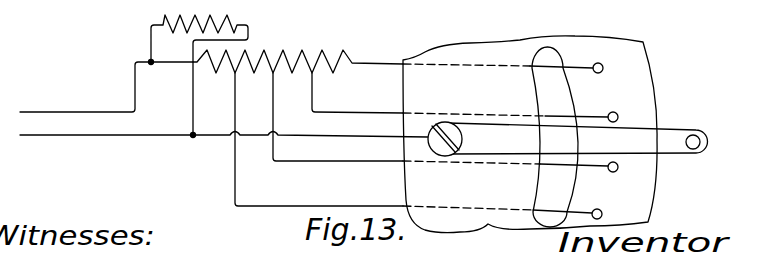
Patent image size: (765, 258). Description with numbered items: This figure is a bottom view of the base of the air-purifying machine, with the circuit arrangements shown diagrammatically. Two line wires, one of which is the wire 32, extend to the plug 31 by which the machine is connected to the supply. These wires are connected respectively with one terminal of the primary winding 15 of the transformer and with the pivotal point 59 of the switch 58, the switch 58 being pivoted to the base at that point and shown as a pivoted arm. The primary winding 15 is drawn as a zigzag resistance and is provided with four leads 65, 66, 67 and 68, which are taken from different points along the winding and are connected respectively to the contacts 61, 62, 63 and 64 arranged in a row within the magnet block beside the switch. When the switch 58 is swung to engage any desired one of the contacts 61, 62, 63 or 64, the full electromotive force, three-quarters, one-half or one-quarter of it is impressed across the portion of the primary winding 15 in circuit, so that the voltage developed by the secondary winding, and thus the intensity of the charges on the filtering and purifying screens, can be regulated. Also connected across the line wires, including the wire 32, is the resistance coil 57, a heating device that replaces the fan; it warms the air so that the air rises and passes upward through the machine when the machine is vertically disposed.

The plug 31 is at (84, 111).
The wire 32 is at (102, 137).
The resistance coil 57 is at (208, 14).
The primary winding 15 is at (302, 50).
The switch 58 is at (660, 148).
The pivotal point 59 is at (437, 152).
The contact 61 is at (604, 66).
The contact 62 is at (619, 114).
The contact 63 is at (619, 170).
The contact 64 is at (603, 214).
The lead 65 is at (548, 70).
The lead 66 is at (545, 117).
The lead 67 is at (575, 168).
The lead 68 is at (535, 213).